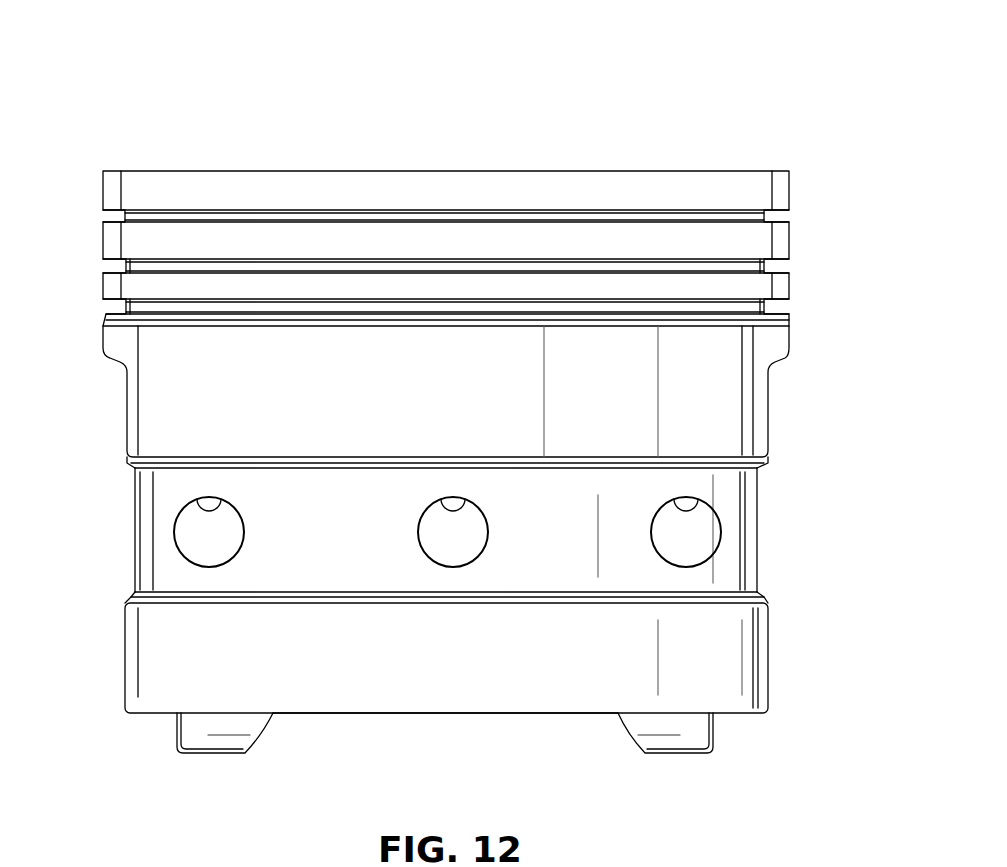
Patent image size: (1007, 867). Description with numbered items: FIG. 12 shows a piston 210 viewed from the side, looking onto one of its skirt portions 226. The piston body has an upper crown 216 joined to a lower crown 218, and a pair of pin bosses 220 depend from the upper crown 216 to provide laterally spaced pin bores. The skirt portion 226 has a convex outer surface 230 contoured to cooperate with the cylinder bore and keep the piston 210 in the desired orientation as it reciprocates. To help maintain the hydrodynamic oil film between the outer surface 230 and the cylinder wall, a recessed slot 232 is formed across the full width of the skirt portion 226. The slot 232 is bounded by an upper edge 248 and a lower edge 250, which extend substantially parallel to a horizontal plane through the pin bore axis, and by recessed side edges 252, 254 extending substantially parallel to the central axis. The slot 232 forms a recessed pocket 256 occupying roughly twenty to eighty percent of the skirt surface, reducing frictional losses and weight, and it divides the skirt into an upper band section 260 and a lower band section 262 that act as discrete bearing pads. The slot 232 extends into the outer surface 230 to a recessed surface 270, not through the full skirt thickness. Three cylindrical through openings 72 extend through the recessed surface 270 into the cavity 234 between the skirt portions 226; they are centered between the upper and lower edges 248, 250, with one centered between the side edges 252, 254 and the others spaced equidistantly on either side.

The piston 210 is at (528, 132).
The upper crown 216 is at (790, 195).
The lower crown 218 is at (790, 348).
The outer surface 230 is at (748, 407).
The upper band section 260 is at (185, 386).
The recessed surface 270 is at (132, 497).
The upper edge 248 is at (274, 465).
The recessed slot 232 is at (735, 510).
The recessed side edge 252 is at (130, 520).
The recessed side edge 254 is at (758, 548).
The recessed pocket 256 is at (127, 545).
The through opening 72 is at (210, 508).
The lower edge 250 is at (485, 600).
The skirt portion 226 is at (178, 640).
The lower band section 262 is at (188, 669).
The pin boss 220 is at (224, 742).
The cavity 234 is at (322, 727).